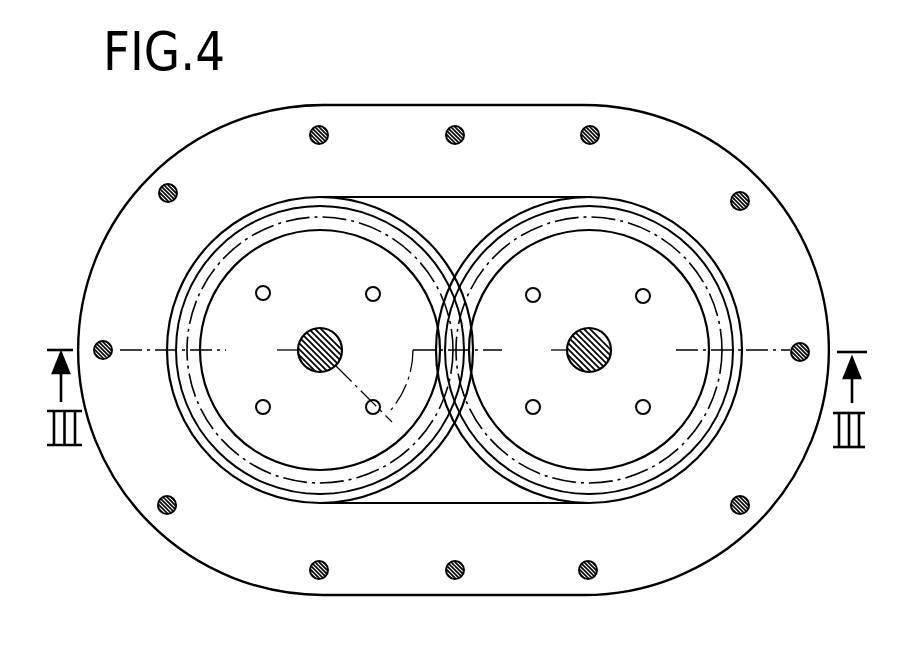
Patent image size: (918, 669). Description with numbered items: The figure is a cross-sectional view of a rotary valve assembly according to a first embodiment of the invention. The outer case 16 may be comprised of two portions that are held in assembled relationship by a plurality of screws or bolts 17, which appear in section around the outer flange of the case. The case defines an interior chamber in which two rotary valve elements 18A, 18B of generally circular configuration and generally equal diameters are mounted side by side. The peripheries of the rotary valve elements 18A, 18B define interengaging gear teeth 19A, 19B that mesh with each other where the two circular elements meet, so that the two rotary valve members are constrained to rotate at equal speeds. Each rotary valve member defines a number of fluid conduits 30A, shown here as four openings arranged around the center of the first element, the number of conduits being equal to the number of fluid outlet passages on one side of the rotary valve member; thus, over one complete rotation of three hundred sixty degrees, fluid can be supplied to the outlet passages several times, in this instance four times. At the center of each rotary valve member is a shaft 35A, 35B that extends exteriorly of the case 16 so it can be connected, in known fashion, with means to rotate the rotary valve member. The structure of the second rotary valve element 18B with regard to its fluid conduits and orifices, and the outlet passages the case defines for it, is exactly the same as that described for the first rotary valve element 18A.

The case 16 is at (518, 142).
The screws or bolts 17 is at (159, 191).
The rotary valve element 18A is at (273, 360).
The rotary valve element 18B is at (547, 360).
The gear teeth 19A is at (384, 476).
The gear teeth 19B is at (498, 460).
The fluid conduits 30A is at (366, 294).
The shaft 35A is at (336, 364).
The shaft 35B is at (604, 364).